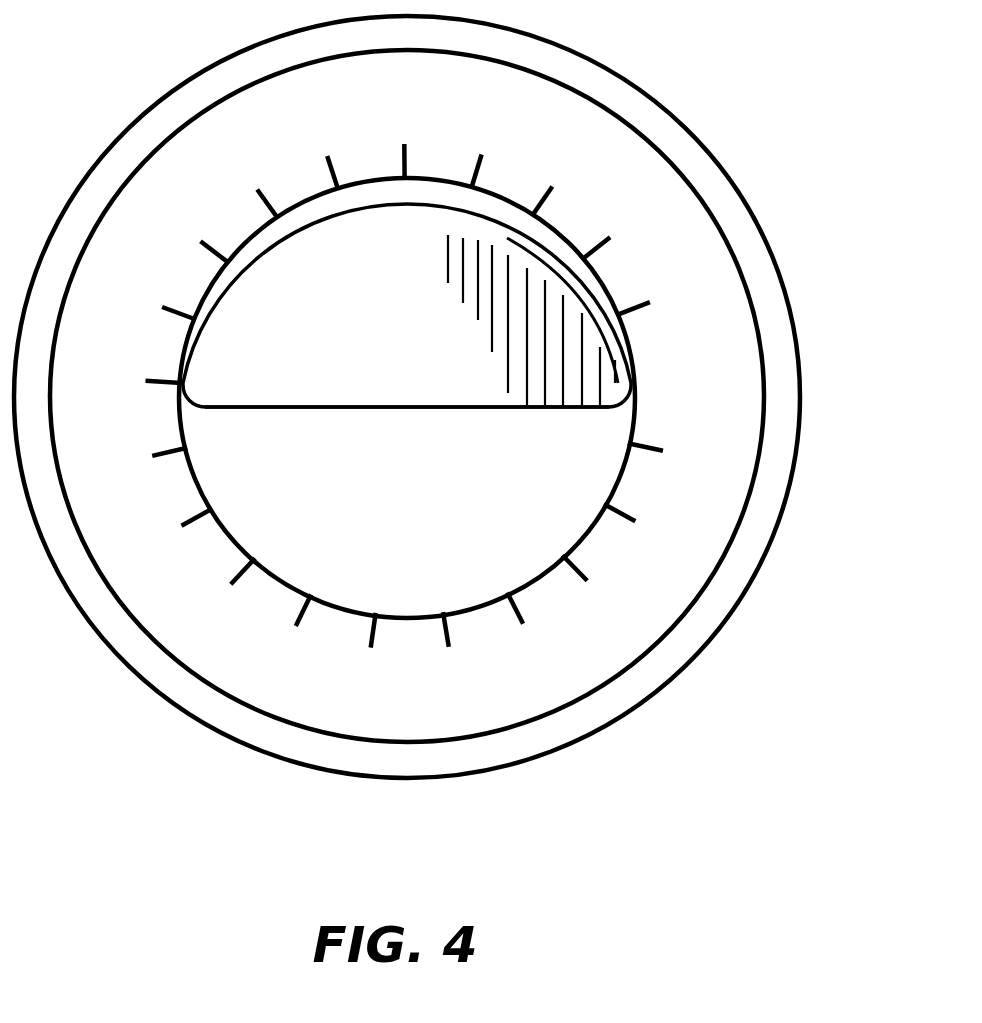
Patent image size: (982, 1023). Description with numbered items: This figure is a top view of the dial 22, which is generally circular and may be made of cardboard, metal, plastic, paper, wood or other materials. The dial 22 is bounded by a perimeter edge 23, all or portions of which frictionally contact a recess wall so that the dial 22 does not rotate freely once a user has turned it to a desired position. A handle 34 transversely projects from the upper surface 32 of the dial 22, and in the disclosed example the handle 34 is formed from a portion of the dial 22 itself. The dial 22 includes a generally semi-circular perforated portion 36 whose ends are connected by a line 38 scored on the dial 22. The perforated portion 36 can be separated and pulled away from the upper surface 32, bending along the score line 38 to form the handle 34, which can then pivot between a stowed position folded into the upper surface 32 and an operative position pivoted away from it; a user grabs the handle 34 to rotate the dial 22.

The dial 22 is at (782, 377).
The perimeter edge 23 is at (162, 698).
The upper surface 32 is at (240, 607).
The handle 34 is at (488, 210).
The semi-circular perforated portion 36 is at (308, 372).
The score line 38 is at (441, 410).